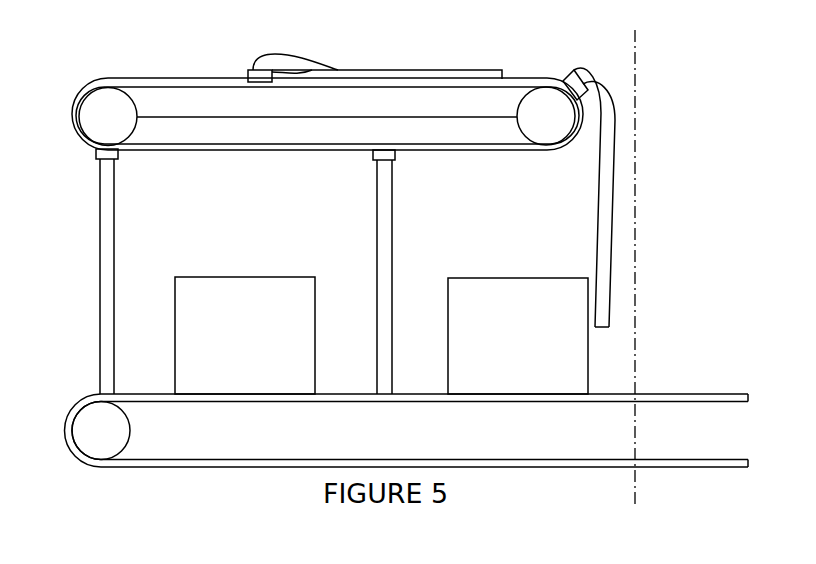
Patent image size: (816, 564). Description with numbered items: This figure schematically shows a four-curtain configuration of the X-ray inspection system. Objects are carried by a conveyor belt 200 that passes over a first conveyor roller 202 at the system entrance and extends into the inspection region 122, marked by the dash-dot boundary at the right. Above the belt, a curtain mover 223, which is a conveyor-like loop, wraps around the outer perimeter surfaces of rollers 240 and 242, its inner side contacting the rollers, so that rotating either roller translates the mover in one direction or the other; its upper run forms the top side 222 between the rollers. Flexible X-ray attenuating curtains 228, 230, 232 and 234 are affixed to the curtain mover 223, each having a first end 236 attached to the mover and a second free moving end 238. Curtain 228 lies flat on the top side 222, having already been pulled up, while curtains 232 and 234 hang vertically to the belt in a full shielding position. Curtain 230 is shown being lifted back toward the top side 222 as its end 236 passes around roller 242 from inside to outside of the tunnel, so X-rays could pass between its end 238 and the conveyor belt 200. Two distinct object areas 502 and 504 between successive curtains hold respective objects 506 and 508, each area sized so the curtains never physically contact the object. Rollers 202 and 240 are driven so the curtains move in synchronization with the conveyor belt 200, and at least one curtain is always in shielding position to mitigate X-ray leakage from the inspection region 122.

The inspection region 122 is at (675, 267).
The conveyor belt 200 is at (207, 459).
The first conveyor roller 202 is at (100, 430).
The top side 222 is at (325, 117).
The curtain mover 223 is at (143, 79).
The curtain 228 is at (330, 67).
The curtain 230 is at (615, 178).
The curtain 232 is at (392, 193).
The curtain 234 is at (115, 193).
The first end 236 is at (563, 79).
The second free moving end 238 is at (608, 324).
The roller 240 is at (138, 108).
The roller 242 is at (517, 108).
The object area 502 is at (238, 218).
The object area 504 is at (516, 219).
The object 506 is at (248, 277).
The object 508 is at (518, 278).